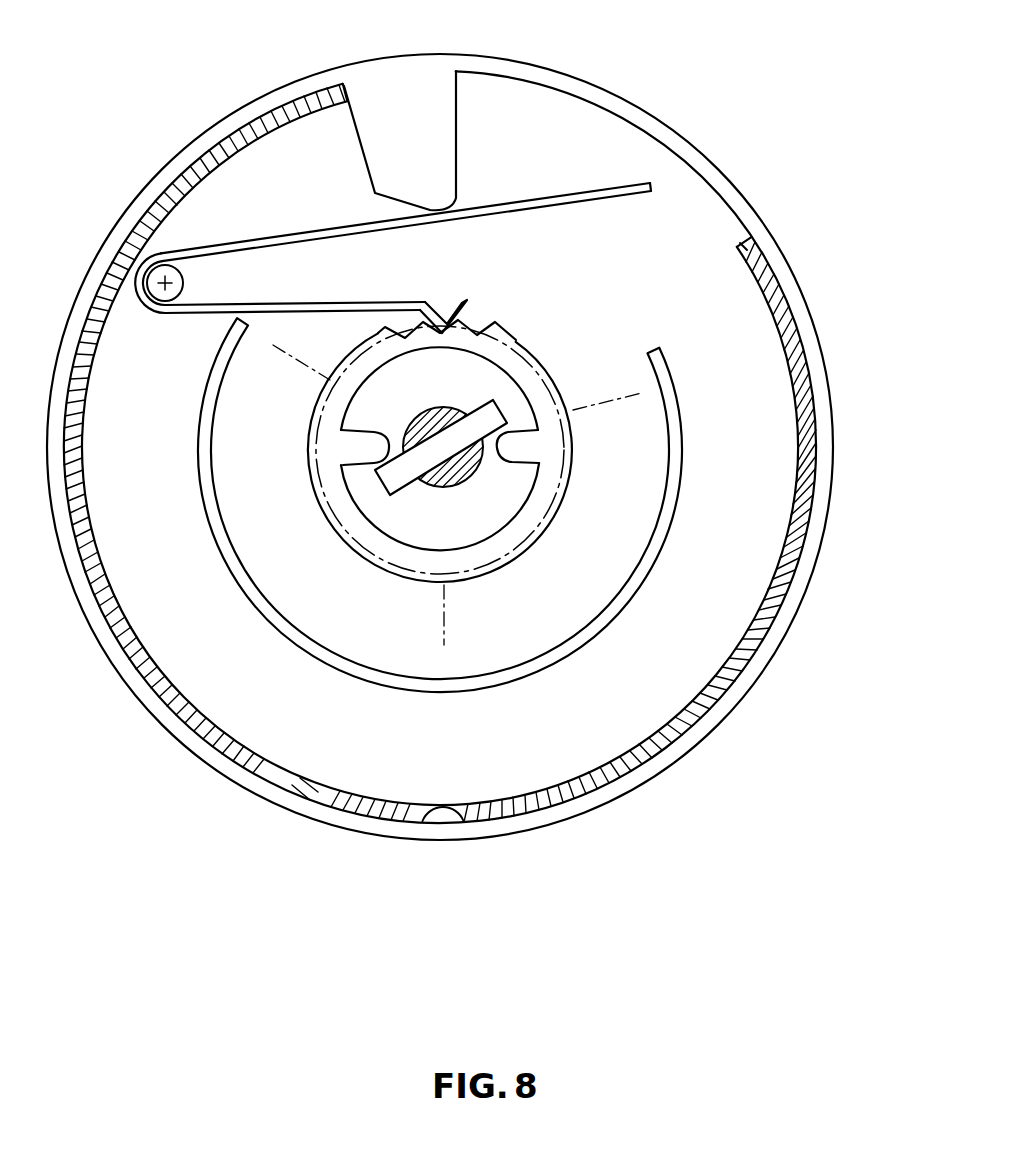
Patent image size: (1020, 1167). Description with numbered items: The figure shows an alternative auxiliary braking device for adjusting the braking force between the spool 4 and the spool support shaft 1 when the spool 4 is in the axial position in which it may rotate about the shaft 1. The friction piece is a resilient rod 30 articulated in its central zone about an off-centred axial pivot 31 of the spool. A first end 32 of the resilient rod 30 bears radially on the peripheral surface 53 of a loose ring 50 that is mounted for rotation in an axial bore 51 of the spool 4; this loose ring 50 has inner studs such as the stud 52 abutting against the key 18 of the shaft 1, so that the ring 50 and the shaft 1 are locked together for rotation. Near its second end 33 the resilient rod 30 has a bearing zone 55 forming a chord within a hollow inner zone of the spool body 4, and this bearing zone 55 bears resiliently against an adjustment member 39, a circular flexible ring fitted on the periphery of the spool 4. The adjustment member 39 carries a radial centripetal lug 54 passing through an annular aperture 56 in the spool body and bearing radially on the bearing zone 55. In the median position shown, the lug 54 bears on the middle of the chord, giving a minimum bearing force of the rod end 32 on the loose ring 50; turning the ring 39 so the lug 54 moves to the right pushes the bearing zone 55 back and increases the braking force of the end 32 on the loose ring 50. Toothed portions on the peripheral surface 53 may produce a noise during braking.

The spool support shaft 1 is at (470, 480).
The spool 4 is at (310, 790).
The key 18 is at (490, 418).
The resilient rod 30 is at (292, 232).
The off-centred axial pivot 31 is at (140, 262).
The first end of the resilient rod 32 is at (452, 308).
The second end of the resilient rod 33 is at (652, 181).
The adjustment member 39 is at (197, 750).
The loose ring 50 is at (473, 557).
The axial bore 51 is at (517, 557).
The inner stud 52 is at (520, 443).
The peripheral surface 53 is at (477, 328).
The radial centripetal lug 54 is at (402, 140).
The bearing zone 55 is at (463, 205).
The annular aperture 56 is at (745, 230).